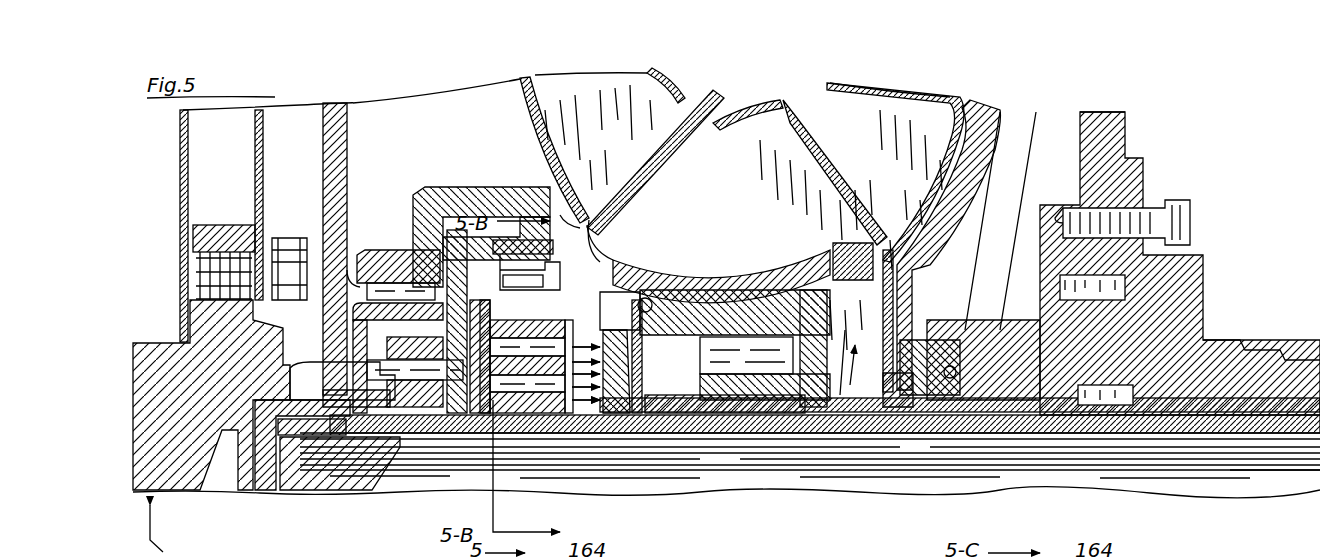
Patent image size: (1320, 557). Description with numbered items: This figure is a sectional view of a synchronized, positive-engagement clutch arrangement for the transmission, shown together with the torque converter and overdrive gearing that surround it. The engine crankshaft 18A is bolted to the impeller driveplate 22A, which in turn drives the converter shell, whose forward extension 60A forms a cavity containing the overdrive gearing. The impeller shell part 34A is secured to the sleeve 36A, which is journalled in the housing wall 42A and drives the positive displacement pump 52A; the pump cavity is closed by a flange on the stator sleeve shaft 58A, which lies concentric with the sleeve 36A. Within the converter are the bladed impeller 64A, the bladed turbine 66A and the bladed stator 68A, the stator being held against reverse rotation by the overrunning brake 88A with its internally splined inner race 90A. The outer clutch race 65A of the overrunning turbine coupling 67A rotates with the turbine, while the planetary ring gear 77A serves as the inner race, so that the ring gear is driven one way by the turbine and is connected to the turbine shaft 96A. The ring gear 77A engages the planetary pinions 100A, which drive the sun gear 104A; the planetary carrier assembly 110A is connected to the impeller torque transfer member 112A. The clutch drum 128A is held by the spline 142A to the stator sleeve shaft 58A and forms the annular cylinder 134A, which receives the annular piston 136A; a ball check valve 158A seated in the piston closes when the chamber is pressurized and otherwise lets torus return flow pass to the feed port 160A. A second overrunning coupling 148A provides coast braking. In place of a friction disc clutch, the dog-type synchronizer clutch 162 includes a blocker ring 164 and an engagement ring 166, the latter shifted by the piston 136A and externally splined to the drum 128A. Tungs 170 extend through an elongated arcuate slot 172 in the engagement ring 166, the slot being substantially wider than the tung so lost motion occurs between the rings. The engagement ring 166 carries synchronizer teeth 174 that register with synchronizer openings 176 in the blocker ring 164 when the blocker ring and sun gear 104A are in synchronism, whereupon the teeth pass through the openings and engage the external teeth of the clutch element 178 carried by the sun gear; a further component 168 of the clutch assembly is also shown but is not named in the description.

The crankshaft 18A is at (150, 343).
The impeller driveplate 22A is at (257, 202).
The impeller shell part 34A is at (983, 110).
The sleeve 36A is at (977, 290).
The housing wall 42A is at (1047, 200).
The positive displacement pump 52A is at (1135, 268).
The stator sleeve shaft 58A is at (1035, 370).
The converter shell extension 60A is at (327, 160).
The bladed impeller 64A is at (907, 84).
The outer clutch race 65A is at (426, 193).
The bladed turbine 66A is at (657, 103).
The overrunning turbine coupling 67A is at (345, 283).
The bladed stator 68A is at (743, 133).
The planetary ring gear 77A is at (323, 323).
The overrunning brake 88A is at (773, 307).
The inner race 90A is at (780, 400).
The turbine shaft 96A is at (1257, 478).
The planetary pinions 100A is at (395, 442).
The sun gear 104A is at (422, 452).
The planetary carrier assembly 110A is at (387, 393).
The impeller torque transfer member 112A is at (675, 148).
The clutch drum 128A is at (567, 220).
The annular cylinder 134A is at (588, 447).
The annular piston 136A is at (650, 320).
The spline 142A is at (666, 400).
The second overrunning coupling 148A is at (545, 400).
The ball check valve 158A is at (633, 320).
The feed port 160A is at (606, 438).
The dog-type synchronizer clutch 162 is at (493, 305).
The blocker ring 164 is at (470, 278).
The engagement ring 166 is at (545, 360).
The seal 168 is at (523, 295).
The tungs 170 is at (608, 285).
The arcuate slot 172 is at (580, 227).
The synchronizer teeth 174 is at (518, 350).
The synchronizer openings 176 is at (455, 303).
The clutch element 178 is at (400, 340).